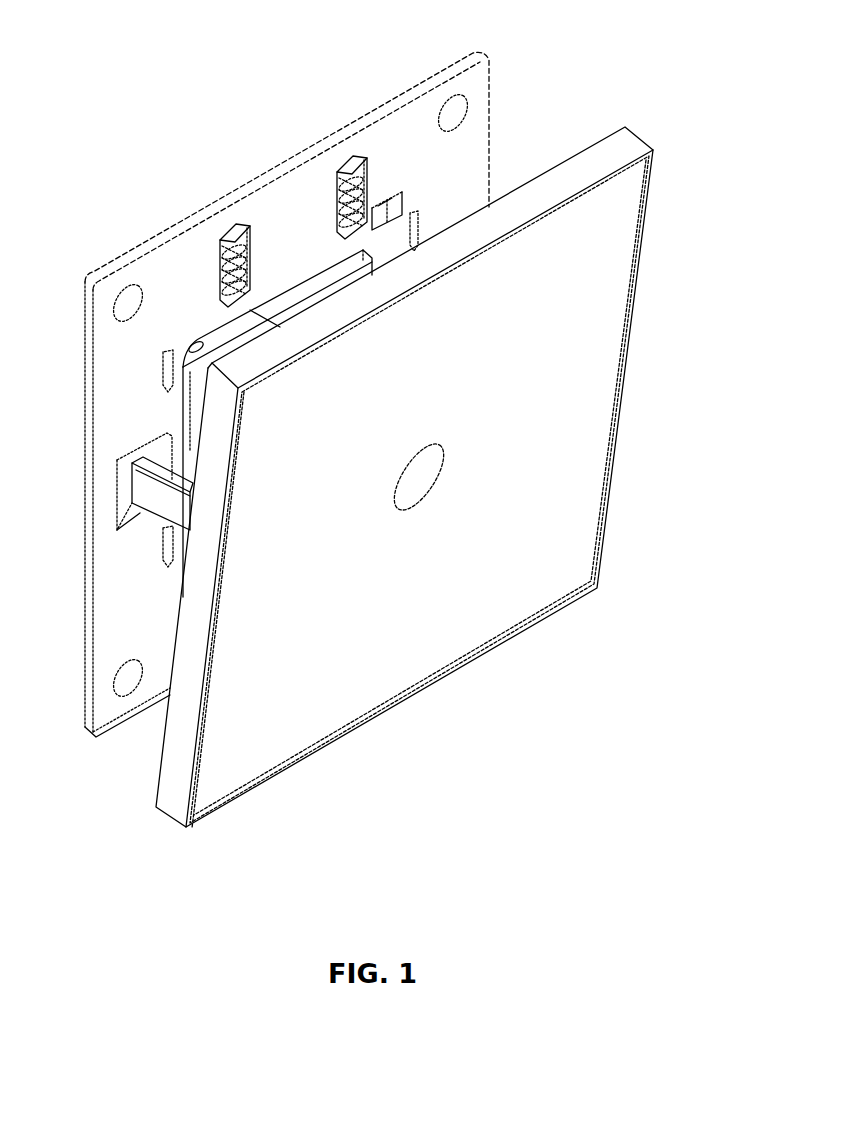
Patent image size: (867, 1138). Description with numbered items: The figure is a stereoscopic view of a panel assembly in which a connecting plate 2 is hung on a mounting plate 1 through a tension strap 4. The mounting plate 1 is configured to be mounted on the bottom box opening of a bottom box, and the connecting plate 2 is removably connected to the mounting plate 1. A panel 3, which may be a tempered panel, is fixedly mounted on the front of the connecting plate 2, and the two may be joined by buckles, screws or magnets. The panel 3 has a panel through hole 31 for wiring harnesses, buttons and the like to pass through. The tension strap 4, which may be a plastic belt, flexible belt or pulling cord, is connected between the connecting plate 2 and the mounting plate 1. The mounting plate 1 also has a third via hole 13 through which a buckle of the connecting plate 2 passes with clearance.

The mounting plate 1 is at (160, 230).
The connecting plate 2 is at (566, 170).
The panel 3 is at (616, 310).
The panel through hole 31 is at (423, 477).
The tension strap 4 is at (158, 513).
The third via hole 13 is at (383, 212).